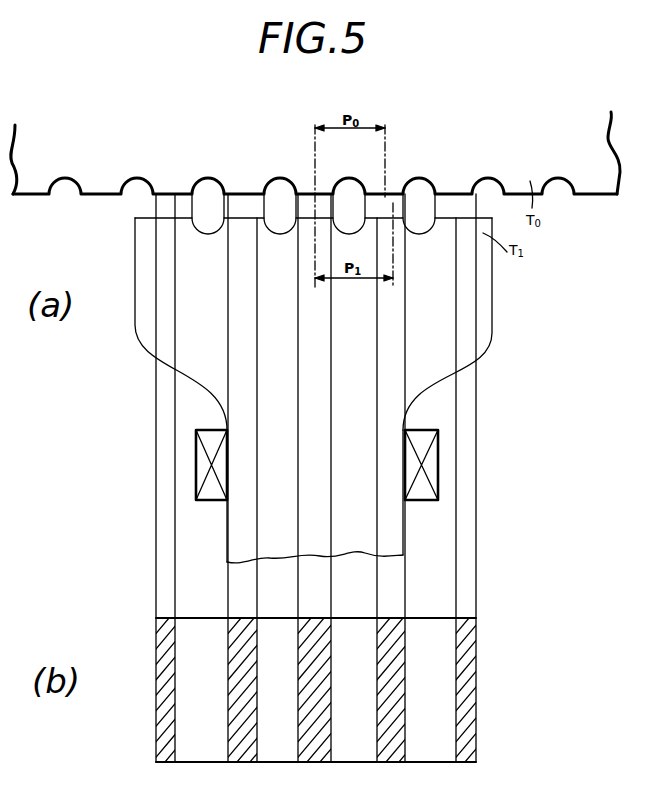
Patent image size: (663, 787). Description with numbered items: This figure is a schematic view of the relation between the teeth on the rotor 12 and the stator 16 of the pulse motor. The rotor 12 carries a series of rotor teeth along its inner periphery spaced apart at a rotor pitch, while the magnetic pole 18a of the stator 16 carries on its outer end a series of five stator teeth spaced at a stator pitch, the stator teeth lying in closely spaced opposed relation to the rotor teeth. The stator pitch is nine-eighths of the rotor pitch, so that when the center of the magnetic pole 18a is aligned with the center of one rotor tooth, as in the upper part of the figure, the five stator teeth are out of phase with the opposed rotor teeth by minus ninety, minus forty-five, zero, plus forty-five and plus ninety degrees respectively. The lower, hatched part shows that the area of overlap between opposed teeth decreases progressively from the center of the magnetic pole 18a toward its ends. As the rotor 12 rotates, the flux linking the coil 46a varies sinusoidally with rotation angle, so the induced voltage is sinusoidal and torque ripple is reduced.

The rotor 12 is at (596, 180).
The stator 16 is at (405, 537).
The magnetic pole 18a is at (492, 318).
The coil 46a is at (438, 470).